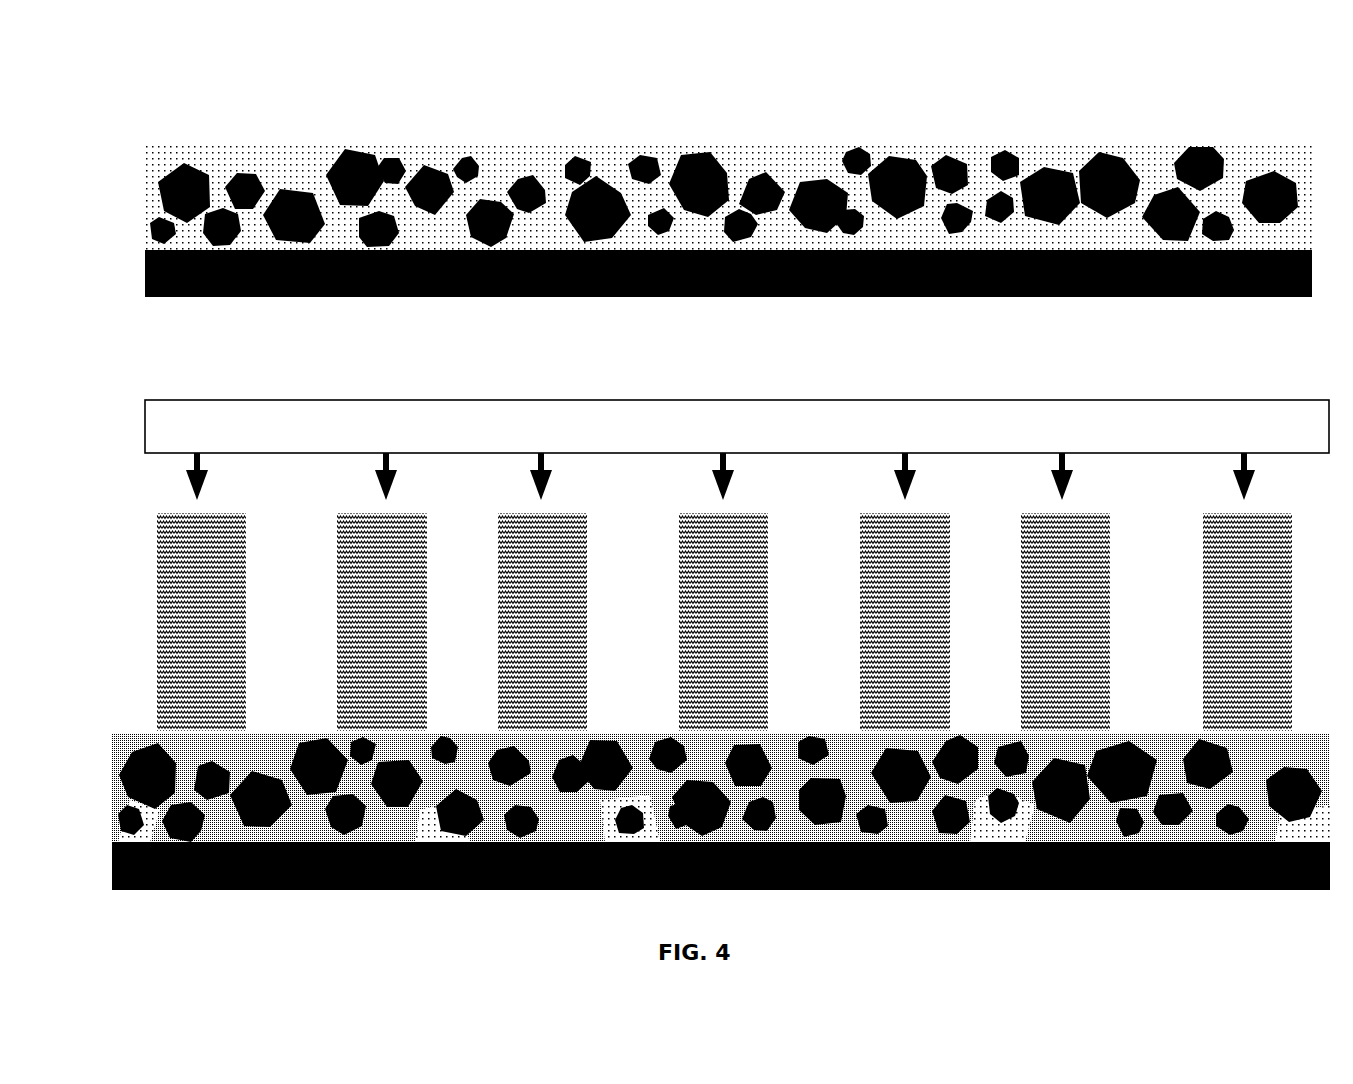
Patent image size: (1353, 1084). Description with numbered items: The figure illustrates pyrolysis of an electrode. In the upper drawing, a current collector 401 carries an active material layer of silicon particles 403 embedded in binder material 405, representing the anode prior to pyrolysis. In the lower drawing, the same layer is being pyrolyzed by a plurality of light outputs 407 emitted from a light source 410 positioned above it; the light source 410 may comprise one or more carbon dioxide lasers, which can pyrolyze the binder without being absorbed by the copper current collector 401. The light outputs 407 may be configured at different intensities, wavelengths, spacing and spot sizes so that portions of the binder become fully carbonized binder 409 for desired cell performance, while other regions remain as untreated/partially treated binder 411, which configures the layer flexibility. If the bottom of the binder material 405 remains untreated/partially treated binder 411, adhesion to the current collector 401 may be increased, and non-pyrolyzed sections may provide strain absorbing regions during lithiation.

The current collector 401 is at (721, 570).
The silicon particles 403 is at (243, 167).
The binder material 405 is at (500, 160).
The light outputs 407 is at (350, 632).
The carbonized binder 409 is at (833, 733).
The light source 410 is at (737, 426).
The untreated/partially treated binder 411 is at (1055, 925).